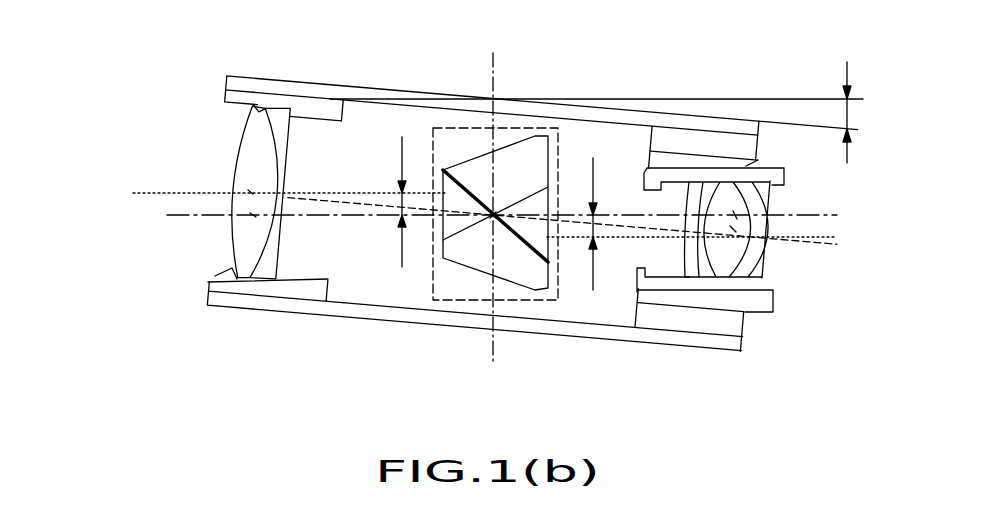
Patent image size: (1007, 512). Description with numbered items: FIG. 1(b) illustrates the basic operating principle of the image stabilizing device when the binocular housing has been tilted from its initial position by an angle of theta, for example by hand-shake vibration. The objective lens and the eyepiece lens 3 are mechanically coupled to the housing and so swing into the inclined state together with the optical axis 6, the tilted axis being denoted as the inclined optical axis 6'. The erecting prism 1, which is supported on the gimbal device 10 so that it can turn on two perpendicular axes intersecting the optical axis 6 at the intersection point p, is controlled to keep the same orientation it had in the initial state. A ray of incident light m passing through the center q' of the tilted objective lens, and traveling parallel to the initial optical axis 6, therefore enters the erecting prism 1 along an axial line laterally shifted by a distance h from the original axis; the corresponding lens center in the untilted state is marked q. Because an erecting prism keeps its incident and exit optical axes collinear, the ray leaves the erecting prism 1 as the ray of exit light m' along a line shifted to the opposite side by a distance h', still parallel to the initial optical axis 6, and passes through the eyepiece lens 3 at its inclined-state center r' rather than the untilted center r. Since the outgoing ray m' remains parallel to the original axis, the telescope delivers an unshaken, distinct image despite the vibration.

The erecting prism 1 is at (475, 272).
The gimbal device 10 is at (557, 280).
The eyepiece lens 3 is at (768, 253).
The optical axis 6 is at (455, 262).
The optical axis in the inclined state 6' is at (451, 179).
The ray of incident light m is at (259, 228).
The ray of exit light m' is at (721, 216).
The intersection point p is at (490, 212).
The point on first lens q is at (187, 265).
The center of the objective lens in the inclined state q' is at (189, 140).
The point on second lens r is at (783, 194).
The center of the eyepiece lens in the inclined state r' is at (784, 275).
The lateral shift distance of incident light h is at (389, 202).
The lateral shift distance of exit light h' is at (612, 227).